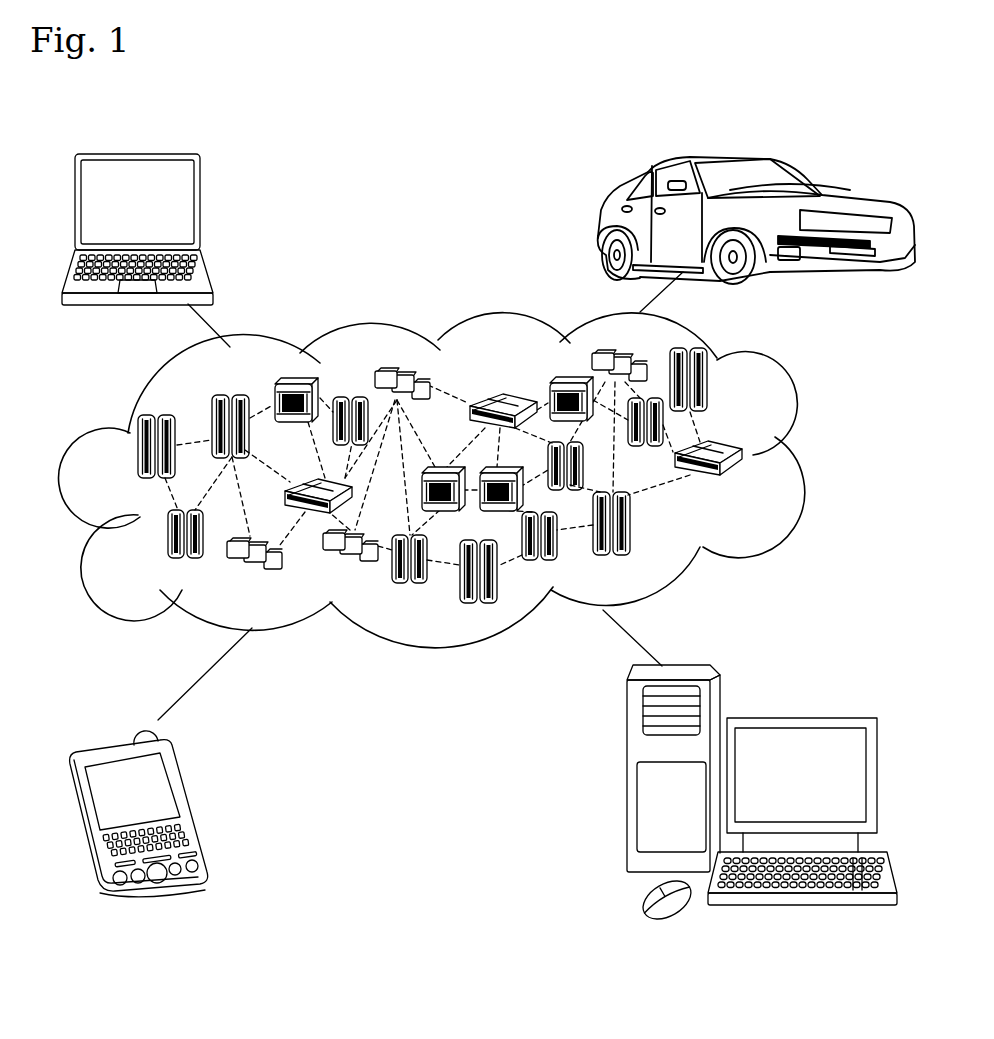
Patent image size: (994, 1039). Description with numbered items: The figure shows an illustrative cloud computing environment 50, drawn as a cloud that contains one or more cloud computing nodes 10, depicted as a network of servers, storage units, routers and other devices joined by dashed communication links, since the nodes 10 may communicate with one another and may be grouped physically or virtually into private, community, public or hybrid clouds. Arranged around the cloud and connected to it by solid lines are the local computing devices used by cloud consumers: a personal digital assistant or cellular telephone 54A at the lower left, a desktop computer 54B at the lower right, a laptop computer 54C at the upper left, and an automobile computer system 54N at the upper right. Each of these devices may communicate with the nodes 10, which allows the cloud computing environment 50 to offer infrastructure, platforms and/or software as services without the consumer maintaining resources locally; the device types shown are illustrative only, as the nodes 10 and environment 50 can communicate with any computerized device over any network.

The cloud computing node 10 is at (750, 485).
The cloud computing environment 50 is at (798, 455).
The personal digital assistant or cellular telephone 54A is at (190, 800).
The desktop computer 54B is at (793, 717).
The laptop computer 54C is at (200, 211).
The automobile computer system 54N is at (598, 226).